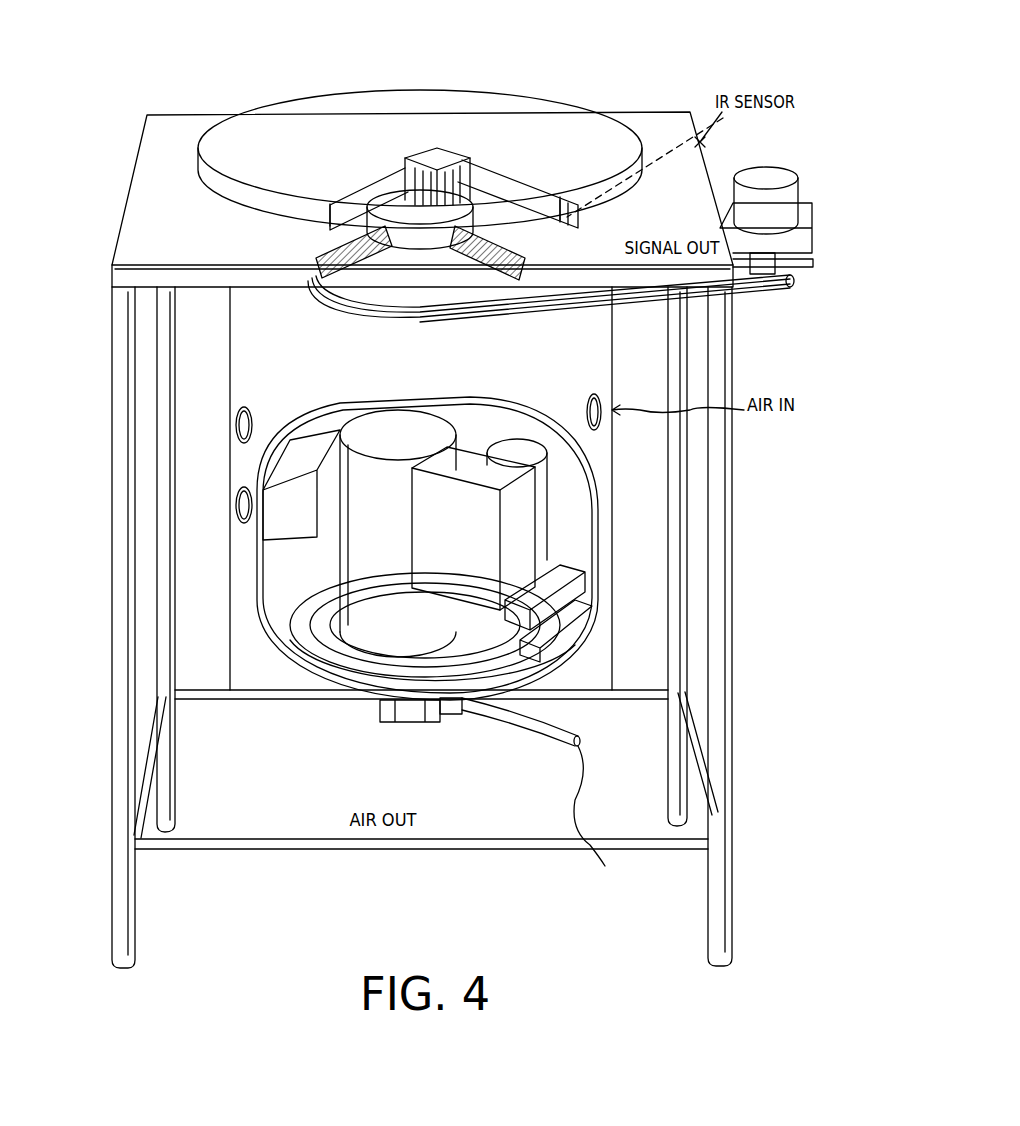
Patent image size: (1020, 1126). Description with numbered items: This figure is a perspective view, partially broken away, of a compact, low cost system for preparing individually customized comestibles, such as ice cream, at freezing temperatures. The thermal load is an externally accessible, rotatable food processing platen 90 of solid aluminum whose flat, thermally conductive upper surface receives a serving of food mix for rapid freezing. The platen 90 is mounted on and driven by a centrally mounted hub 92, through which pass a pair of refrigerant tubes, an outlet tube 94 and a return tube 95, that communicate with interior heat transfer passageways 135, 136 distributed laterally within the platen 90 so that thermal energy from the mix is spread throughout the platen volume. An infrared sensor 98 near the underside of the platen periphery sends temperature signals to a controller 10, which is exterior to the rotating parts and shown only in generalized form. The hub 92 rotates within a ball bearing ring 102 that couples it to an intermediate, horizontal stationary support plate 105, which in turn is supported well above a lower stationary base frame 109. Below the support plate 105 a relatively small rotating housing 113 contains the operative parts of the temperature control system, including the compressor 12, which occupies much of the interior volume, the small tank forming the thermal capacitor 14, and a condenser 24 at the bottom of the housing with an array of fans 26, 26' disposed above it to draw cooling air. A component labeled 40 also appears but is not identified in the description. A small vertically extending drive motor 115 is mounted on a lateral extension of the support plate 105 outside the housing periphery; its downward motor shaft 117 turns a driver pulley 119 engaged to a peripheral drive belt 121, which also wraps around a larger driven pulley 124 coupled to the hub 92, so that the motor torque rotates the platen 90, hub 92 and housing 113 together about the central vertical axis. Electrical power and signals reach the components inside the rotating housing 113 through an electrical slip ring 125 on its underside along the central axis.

The controller 10 is at (608, 820).
The compressor 12 is at (600, 481).
The thermal capacitor 14 is at (390, 585).
The condenser 24 is at (323, 718).
The fan 26 is at (427, 655).
The fan 26' is at (505, 750).
The heater block 40 is at (512, 548).
The food processing platen 90 is at (592, 108).
The hub 92 is at (445, 252).
The outlet tube 94 is at (405, 150).
The return tube 95 is at (440, 148).
The infrared sensor 98 is at (575, 228).
The ball bearing ring 102 is at (410, 250).
The support plate 105 is at (130, 190).
The base frame 109 is at (738, 566).
The housing 113 is at (619, 376).
The drive motor 115 is at (801, 197).
The motor shaft 117 is at (790, 262).
The driver pulley 119 is at (793, 287).
The drive belt 121 is at (622, 305).
The driven pulley 124 is at (320, 318).
The electrical slip ring 125 is at (440, 716).
The heat transfer passageway 135 is at (380, 152).
The heat transfer passageway 136 is at (470, 152).